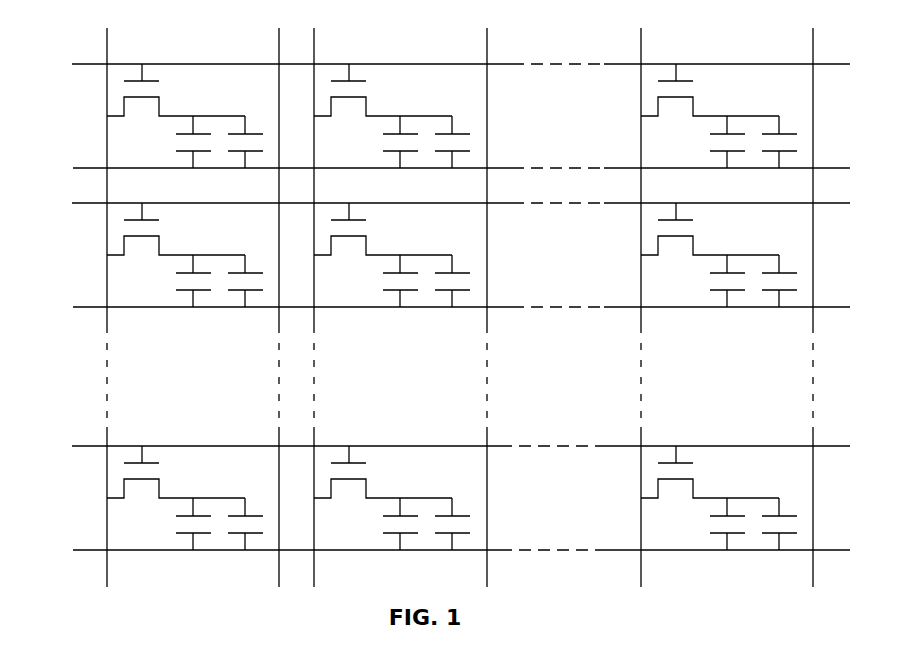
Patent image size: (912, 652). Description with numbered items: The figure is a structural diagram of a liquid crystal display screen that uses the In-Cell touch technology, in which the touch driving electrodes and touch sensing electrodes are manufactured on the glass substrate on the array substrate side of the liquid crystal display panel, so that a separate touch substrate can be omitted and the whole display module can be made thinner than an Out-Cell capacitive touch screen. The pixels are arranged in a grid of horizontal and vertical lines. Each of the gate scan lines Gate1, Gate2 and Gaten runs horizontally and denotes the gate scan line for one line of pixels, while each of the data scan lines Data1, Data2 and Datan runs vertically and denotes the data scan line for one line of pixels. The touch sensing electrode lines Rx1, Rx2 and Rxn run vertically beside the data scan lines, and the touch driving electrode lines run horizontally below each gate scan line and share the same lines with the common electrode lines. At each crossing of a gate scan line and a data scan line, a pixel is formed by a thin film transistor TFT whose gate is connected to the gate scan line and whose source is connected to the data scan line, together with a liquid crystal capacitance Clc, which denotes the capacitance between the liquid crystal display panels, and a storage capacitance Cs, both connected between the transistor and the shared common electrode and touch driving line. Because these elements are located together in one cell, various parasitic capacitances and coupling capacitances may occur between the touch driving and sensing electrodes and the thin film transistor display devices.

The thin film transistor TFT is at (154, 76).
The liquid crystal capacitance Clc is at (180, 142).
The storage capacitance Cs is at (246, 142).
The data scan line Data1 is at (109, 298).
The data scan line Data2 is at (319, 298).
The data scan line Datan is at (643, 298).
The touch sensing electrode Rx1 is at (278, 298).
The touch sensing electrode Rx2 is at (488, 298).
The touch sensing electrode Rxn is at (813, 298).
The gate scan line Gate1 is at (440, 64).
The gate scan line Gate2 is at (440, 203).
The gate scan line Gaten is at (440, 446).